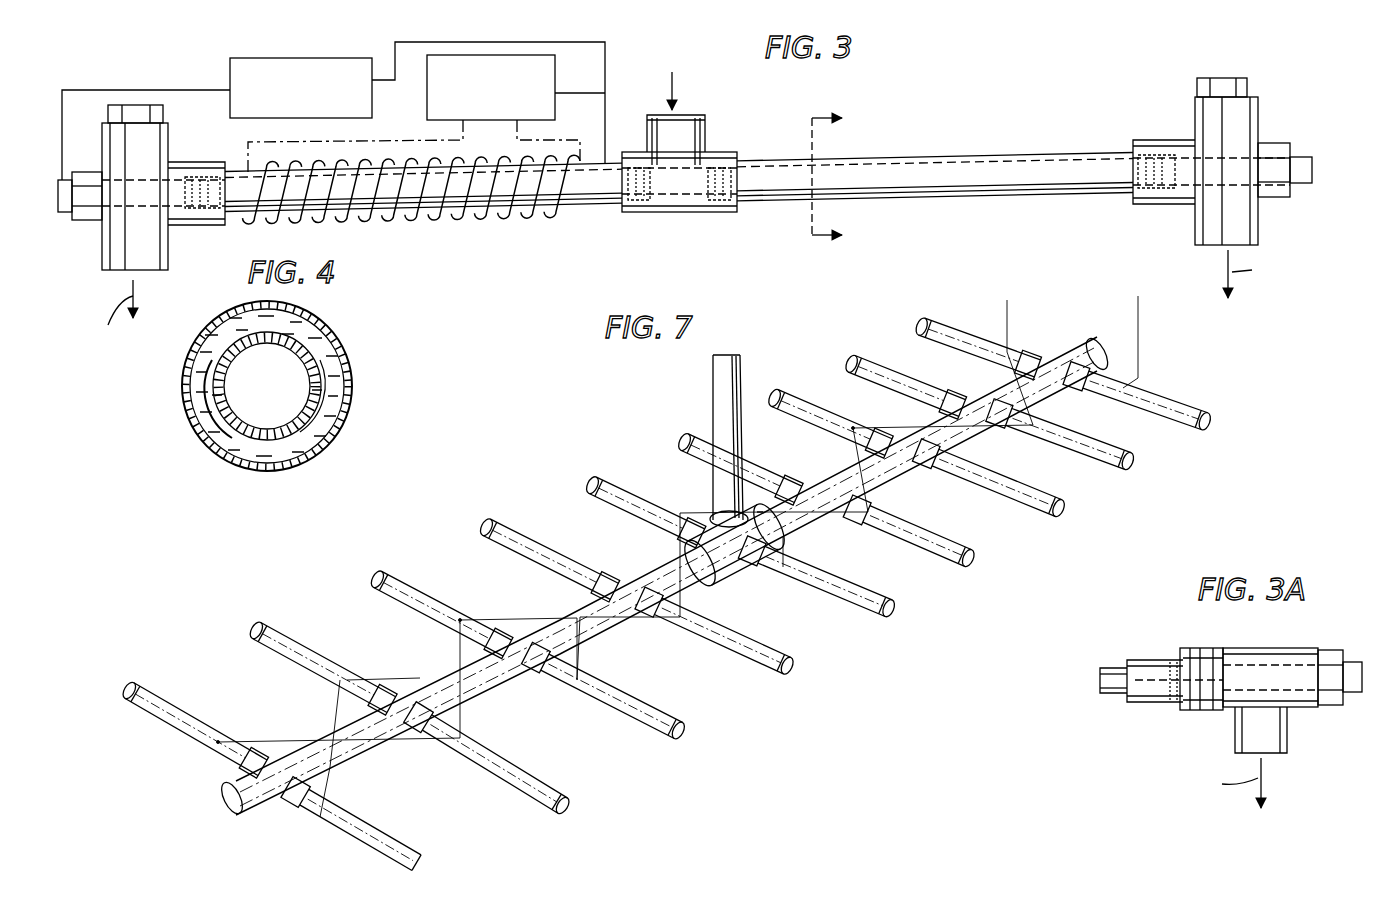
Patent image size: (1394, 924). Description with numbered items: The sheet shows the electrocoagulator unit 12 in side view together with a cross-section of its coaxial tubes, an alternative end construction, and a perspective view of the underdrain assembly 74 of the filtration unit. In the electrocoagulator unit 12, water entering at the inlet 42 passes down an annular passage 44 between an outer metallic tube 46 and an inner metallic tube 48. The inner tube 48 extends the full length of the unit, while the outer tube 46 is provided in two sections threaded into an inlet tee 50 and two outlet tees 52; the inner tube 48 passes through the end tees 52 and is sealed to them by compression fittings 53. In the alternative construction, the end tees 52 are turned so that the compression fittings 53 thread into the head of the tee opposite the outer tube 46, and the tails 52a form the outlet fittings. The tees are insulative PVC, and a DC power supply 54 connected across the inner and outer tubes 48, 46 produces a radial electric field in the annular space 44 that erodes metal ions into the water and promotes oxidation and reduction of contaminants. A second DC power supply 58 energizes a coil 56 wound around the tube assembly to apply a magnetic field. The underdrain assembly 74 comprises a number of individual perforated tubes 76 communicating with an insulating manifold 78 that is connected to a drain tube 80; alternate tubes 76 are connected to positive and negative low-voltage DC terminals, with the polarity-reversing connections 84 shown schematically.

In FIG. 3, the electrocoagulator unit 12 is at (985, 80).
In FIG. 3, the inlet 42 is at (688, 116).
In FIG. 4, the annular passage 44 is at (314, 342).
In FIG. 3, the outer metallic tube 46 is at (590, 208).
In FIG. 4, the outer metallic tube 46 is at (350, 378).
In FIG. 3A, the outer metallic tube 46 is at (1144, 656).
In FIG. 3, the inner metallic tube 48 is at (96, 172).
In FIG. 4, the inner metallic tube 48 is at (324, 436).
In FIG. 3A, the inner metallic tube 48 is at (1113, 696).
In FIG. 3, the inlet tee 50 is at (705, 216).
In FIG. 3, the outlet tee 52 is at (168, 247).
In FIG. 3A, the outlet tee 52 is at (1183, 624).
In FIG. 3A, the tail of tee 52a is at (1236, 738).
In FIG. 3, the compression fitting 53 is at (62, 222).
In FIG. 3A, the compression fitting 53 is at (1334, 648).
In FIG. 3, the DC power supply 54 is at (230, 72).
In FIG. 3, the coil 56 is at (434, 218).
In FIG. 3, the second DC power supply 58 is at (553, 97).
In FIG. 7, the underdrain assembly 74 is at (222, 828).
In FIG. 7, the underdrain tubes 76 is at (258, 718).
In FIG. 7, the manifold 78 is at (465, 690).
In FIG. 7, the drain tube 80 is at (713, 392).
In FIG. 7, the connections 84 is at (462, 648).